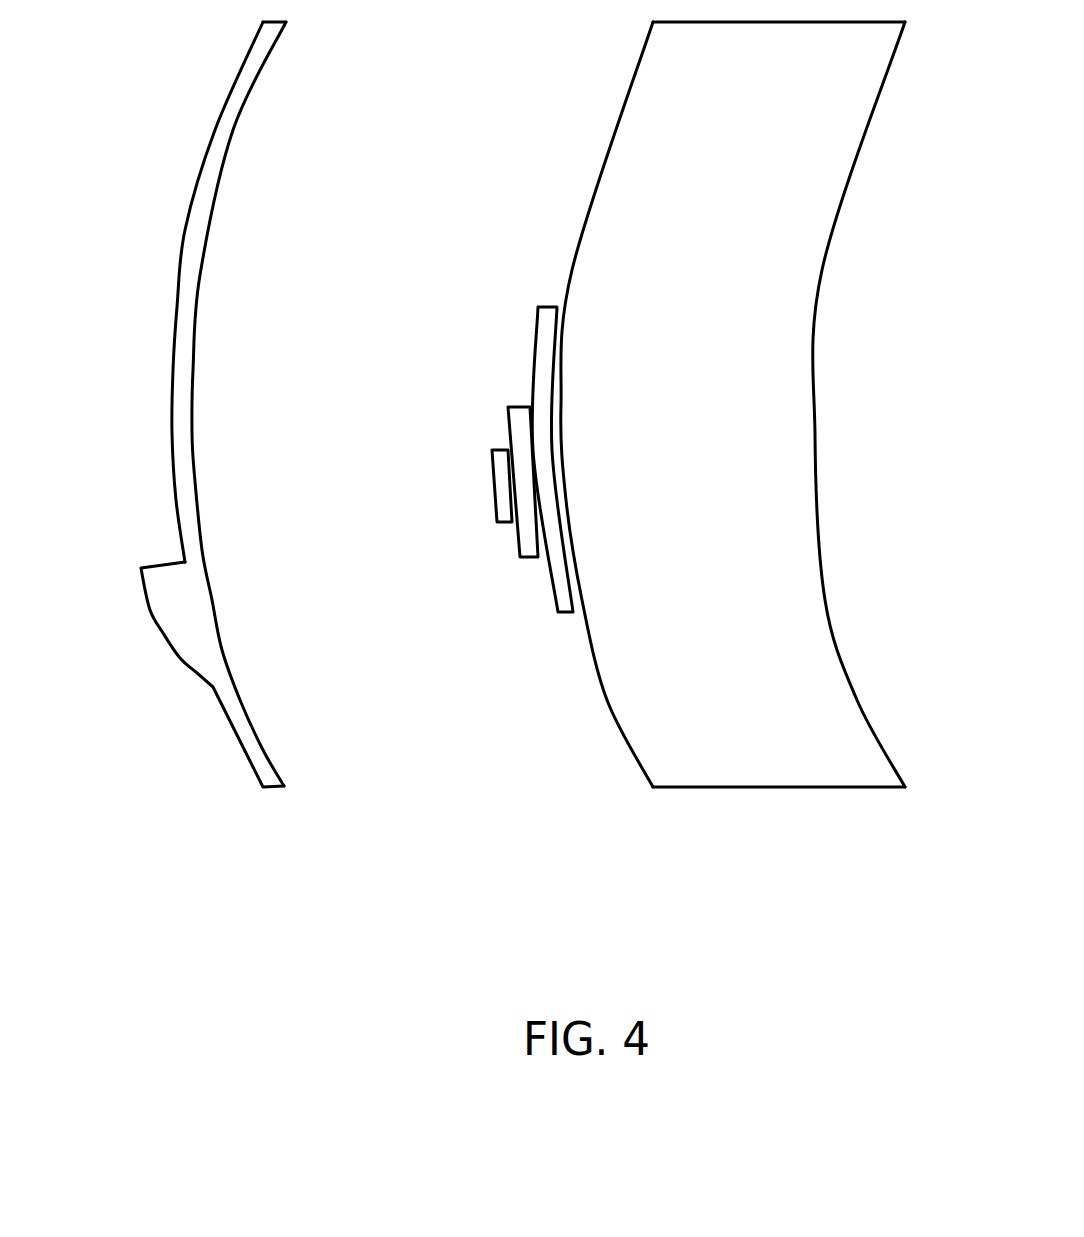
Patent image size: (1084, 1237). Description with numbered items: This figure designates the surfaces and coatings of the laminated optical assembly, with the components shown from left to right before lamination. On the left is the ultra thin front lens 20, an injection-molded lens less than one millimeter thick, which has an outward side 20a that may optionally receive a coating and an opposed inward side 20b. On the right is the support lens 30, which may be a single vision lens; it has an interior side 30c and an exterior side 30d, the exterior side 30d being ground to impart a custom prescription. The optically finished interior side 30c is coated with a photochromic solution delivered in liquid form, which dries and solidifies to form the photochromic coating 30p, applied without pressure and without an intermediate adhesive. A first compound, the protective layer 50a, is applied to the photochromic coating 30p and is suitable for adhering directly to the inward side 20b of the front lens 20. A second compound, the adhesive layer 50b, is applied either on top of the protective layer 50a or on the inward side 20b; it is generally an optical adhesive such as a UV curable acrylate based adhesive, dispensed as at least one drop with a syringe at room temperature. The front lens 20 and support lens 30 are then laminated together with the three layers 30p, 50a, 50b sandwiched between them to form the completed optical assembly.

The front lens 20 is at (196, 481).
The outward side 20a is at (185, 230).
The inward side 20b is at (200, 275).
The support lens 30 is at (675, 481).
The interior side 30c is at (592, 153).
The exterior side 30d is at (845, 163).
The photochromic coating 30p is at (538, 343).
The protective layer 50a is at (513, 430).
The adhesive layer 50b is at (493, 472).